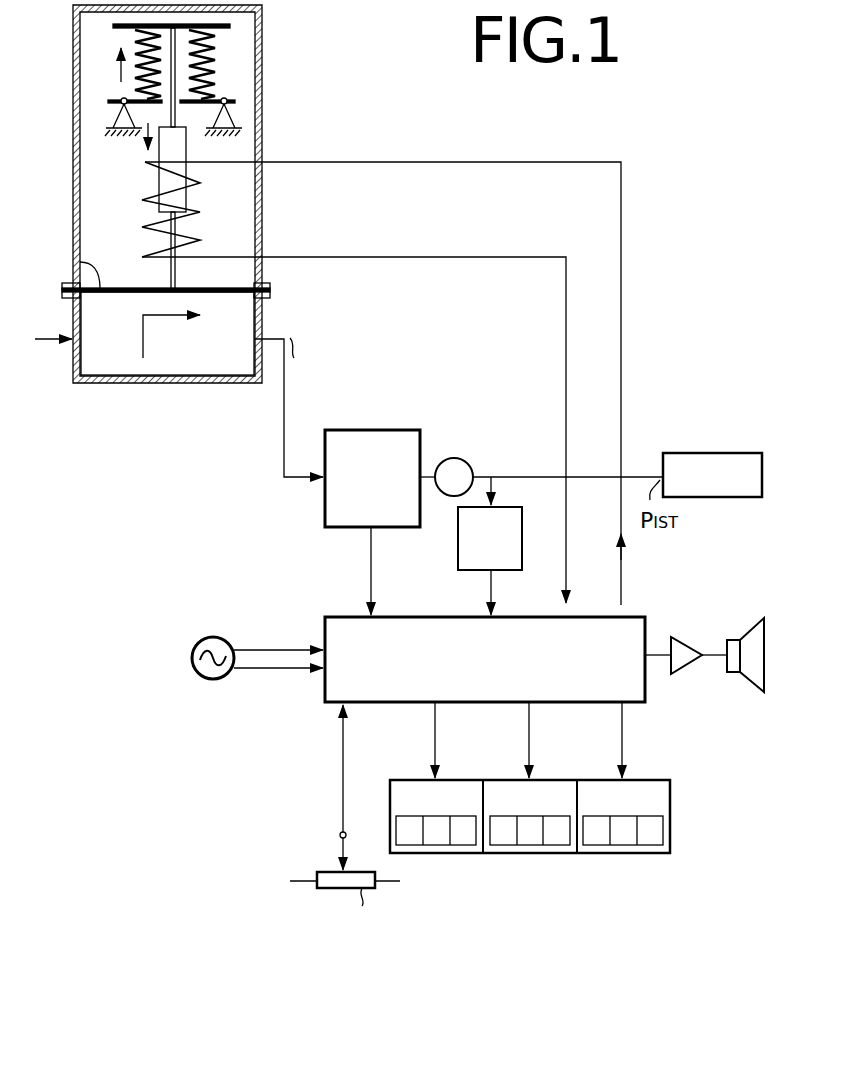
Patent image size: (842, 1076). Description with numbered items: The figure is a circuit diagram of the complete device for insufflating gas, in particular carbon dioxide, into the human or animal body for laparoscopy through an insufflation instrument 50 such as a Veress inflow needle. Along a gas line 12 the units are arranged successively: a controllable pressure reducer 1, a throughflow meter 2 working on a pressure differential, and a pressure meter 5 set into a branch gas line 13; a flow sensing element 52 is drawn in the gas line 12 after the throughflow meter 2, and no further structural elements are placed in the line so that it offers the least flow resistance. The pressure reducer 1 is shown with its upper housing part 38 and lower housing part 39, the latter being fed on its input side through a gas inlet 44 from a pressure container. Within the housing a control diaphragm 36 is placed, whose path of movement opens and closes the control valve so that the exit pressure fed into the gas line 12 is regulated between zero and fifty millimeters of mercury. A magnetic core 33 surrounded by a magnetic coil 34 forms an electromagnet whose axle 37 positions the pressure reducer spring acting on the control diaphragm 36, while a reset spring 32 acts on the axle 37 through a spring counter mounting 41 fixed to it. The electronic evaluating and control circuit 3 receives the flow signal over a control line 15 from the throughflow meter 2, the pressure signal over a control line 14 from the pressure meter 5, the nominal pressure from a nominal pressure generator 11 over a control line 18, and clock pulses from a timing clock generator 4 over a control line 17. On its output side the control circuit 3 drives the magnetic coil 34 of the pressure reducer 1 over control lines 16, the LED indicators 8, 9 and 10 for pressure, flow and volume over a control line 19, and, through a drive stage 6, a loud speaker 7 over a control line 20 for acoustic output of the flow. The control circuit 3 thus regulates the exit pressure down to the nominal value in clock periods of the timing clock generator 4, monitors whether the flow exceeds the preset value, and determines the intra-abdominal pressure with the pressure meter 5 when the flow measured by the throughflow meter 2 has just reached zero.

The controllable pressure reducer 1 is at (71, 148).
The throughflow meter 2 is at (343, 436).
The control circuit 3 is at (452, 617).
The timing clock generator 4 is at (224, 642).
The pressure meter 5 is at (512, 522).
The amplifier 6 is at (683, 662).
The loud speaker 7 is at (745, 668).
The LED indicator 8 is at (437, 838).
The LED indicator 9 is at (532, 838).
The LED indicator 10 is at (637, 838).
The nominal pressure generator 11 is at (328, 872).
The gas line 12 is at (296, 477).
The branch gas line 13 is at (492, 488).
The control line 14 is at (493, 598).
The control line 15 is at (369, 598).
The control lines 16 is at (568, 572).
The control line 17 is at (292, 670).
The control line 18 is at (340, 745).
The control line 19 is at (620, 745).
The control line 20 is at (704, 654).
The reset spring 32 is at (140, 38).
The magnetic core 33 is at (176, 148).
The magnetic coil 34 is at (190, 228).
The control diaphragm 36 is at (73, 253).
The axle 37 is at (178, 272).
The upper housing part 38 is at (262, 72).
The lower housing part 39 is at (238, 385).
The spring counter mounting 41 is at (232, 26).
The gas inlet 44 is at (52, 342).
The insufflation instrument 50 is at (702, 460).
The flow sensor 52 is at (450, 458).